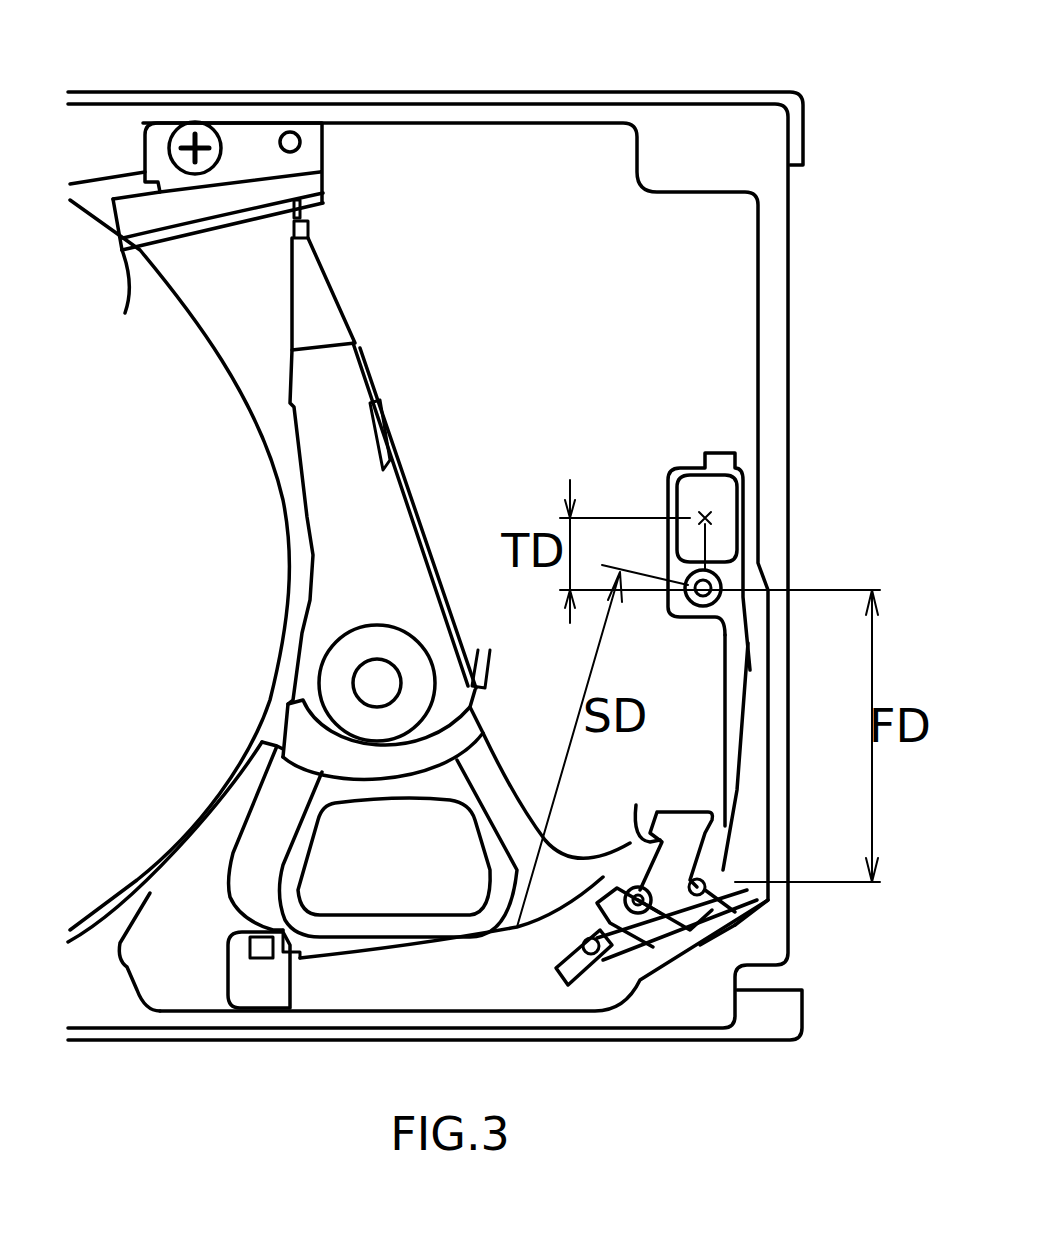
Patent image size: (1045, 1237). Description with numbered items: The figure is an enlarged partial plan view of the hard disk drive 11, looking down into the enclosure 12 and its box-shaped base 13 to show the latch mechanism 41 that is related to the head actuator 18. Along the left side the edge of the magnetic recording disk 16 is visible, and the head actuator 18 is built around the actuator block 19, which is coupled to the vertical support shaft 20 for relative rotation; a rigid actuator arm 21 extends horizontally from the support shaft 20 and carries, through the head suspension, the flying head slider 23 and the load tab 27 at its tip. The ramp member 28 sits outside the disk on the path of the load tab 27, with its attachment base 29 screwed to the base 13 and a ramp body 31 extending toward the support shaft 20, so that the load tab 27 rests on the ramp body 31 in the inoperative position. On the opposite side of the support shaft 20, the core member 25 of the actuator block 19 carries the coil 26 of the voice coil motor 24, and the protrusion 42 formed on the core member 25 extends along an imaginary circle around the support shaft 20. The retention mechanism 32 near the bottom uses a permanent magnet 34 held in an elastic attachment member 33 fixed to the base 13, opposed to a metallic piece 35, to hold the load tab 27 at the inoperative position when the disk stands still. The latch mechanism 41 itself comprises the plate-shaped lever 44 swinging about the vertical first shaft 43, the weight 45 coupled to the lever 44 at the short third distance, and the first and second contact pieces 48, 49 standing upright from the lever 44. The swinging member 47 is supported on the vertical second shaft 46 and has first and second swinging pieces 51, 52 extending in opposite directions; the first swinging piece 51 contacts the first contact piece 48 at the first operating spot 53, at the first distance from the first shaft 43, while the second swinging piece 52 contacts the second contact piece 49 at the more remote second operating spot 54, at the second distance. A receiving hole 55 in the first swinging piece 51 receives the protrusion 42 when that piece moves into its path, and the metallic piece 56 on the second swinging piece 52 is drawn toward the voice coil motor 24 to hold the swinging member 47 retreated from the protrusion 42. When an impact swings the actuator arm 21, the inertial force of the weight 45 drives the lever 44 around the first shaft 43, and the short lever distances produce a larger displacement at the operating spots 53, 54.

The hard disk drive 11 is at (600, 72).
The enclosure 12 is at (820, 232).
The base 13 is at (790, 312).
The magnetic recording disk 16 is at (160, 263).
The head actuator 18 is at (228, 614).
The actuator block 19 is at (472, 709).
The support shaft 20 is at (353, 690).
The actuator arms 21 is at (307, 524).
The flying head slider 23 is at (309, 231).
The voice coil motor 24 is at (228, 822).
The core member 25 is at (405, 948).
The coil 26 is at (300, 880).
The load tab 27 is at (301, 208).
The ramp member 28 is at (175, 104).
The attachment base 29 is at (233, 120).
The ramp bodies 31 is at (128, 262).
The retention mechanism 32 is at (264, 1005).
The attachment member 33 is at (228, 963).
The permanent magnet 34 is at (250, 948).
The metallic piece 35 is at (293, 960).
The latch mechanism 41 is at (790, 910).
The protrusion 42 is at (620, 848).
The first shaft 43 is at (698, 601).
The lever 44 is at (772, 648).
The weight 45 is at (745, 515).
The second shaft 46 is at (692, 935).
The swinging member 47 is at (742, 834).
The first contact piece 48 is at (737, 913).
The second contact piece 49 is at (583, 947).
The first swinging piece 51 is at (681, 812).
The second swinging piece 52 is at (565, 977).
The first operating spot 53 is at (705, 882).
The second operating spot 54 is at (618, 955).
The receiving hole 55 is at (629, 802).
The metallic piece 56 is at (500, 885).